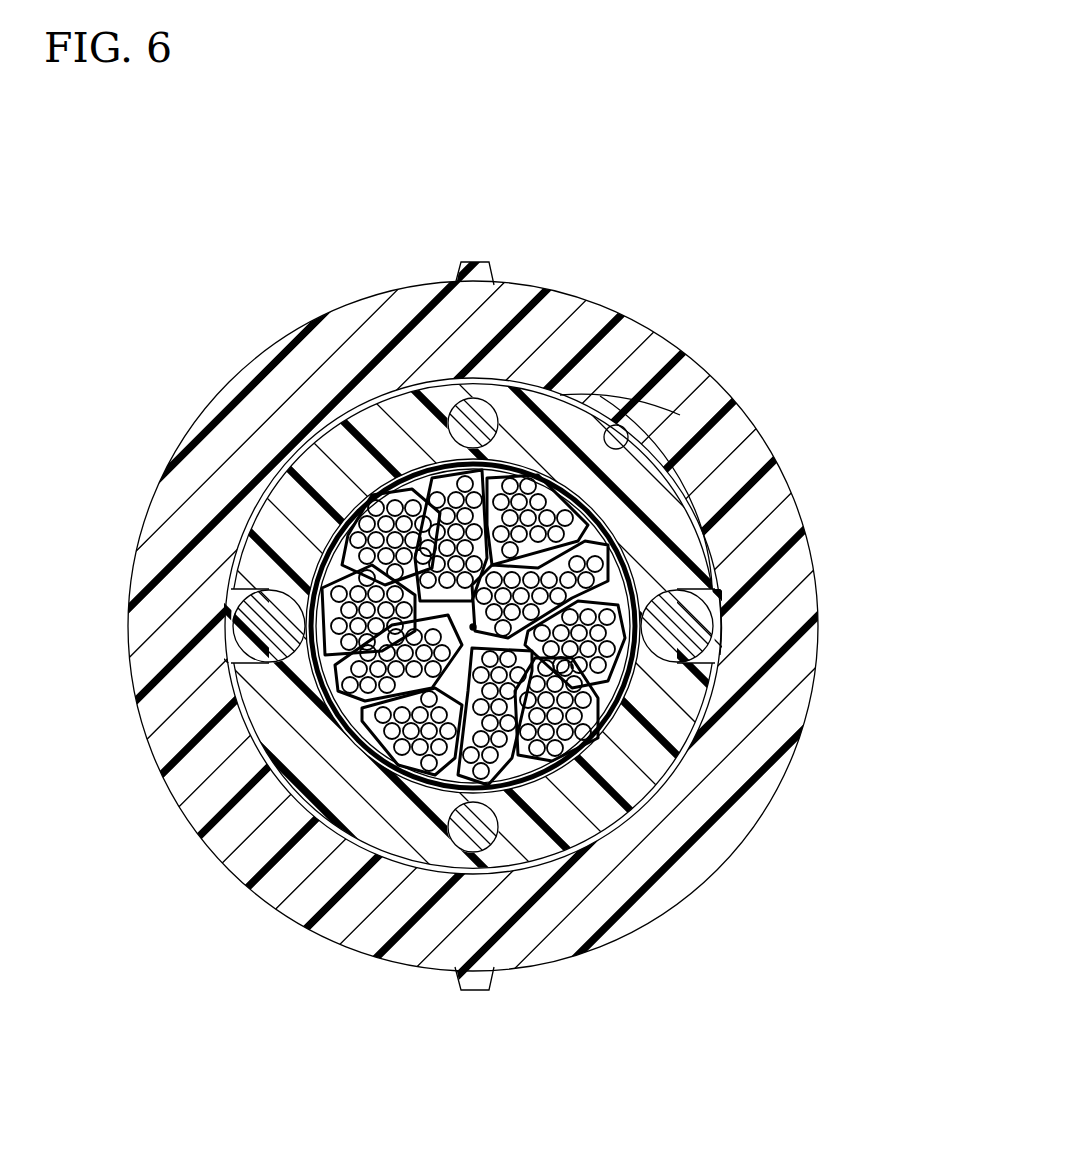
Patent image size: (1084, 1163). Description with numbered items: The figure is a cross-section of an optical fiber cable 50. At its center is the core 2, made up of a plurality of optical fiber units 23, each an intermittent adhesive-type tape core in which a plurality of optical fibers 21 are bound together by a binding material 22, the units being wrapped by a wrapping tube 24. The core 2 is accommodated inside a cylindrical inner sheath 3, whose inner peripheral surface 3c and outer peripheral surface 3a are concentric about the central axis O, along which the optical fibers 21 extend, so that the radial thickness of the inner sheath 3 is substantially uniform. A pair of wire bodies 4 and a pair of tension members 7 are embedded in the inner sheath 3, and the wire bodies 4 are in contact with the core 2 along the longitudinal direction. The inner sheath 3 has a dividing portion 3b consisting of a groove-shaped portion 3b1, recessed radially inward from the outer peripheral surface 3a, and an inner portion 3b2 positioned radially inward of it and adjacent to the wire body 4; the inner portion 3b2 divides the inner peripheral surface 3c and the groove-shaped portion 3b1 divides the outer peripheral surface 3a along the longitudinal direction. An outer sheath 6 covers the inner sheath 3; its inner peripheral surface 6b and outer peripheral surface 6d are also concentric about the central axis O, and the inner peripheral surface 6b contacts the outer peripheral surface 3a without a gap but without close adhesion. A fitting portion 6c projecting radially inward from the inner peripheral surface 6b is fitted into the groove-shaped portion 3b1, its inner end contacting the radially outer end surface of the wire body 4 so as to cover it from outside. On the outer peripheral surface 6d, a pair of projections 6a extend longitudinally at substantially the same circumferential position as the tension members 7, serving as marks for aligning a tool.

The optical fiber cable 50 is at (188, 195).
The outer sheath 6 is at (353, 340).
The projection 6a is at (468, 268).
The inner peripheral surface of the outer sheath 6b is at (622, 443).
The fitting portion 6c is at (708, 655).
The outer peripheral surface of the outer sheath 6d is at (616, 430).
The tension member 7 is at (478, 415).
The inner sheath 3 is at (682, 735).
The outer peripheral surface of the inner sheath 3a is at (700, 478).
The dividing portion 3b is at (597, 616).
The groove-shaped portion 3b1 is at (718, 598).
The inner portion 3b2 is at (692, 640).
The inner peripheral surface of the inner sheath 3c is at (358, 742).
The wire body 4 is at (690, 672).
The core 2 is at (566, 754).
The optical fiber 21 is at (422, 770).
The binding material 22 is at (445, 780).
The optical fiber unit 23 is at (464, 786).
The wrapping tube 24 is at (538, 778).
The central axis O is at (470, 628).